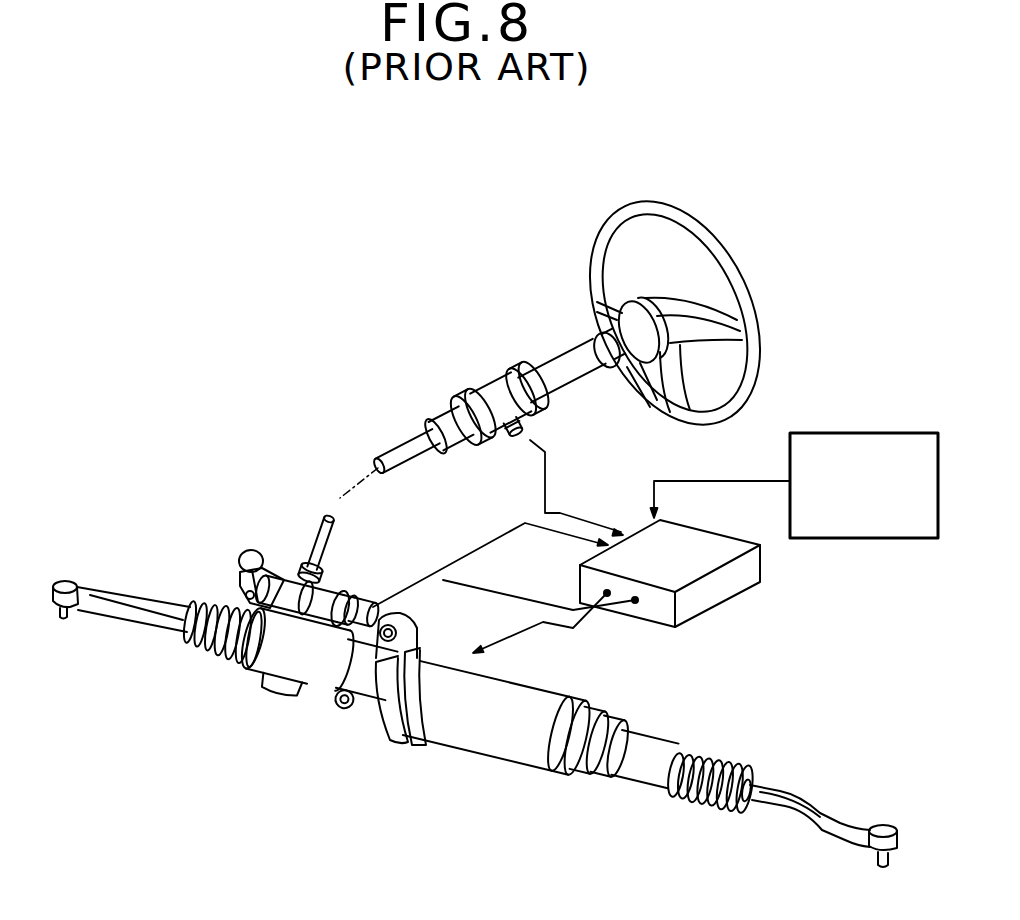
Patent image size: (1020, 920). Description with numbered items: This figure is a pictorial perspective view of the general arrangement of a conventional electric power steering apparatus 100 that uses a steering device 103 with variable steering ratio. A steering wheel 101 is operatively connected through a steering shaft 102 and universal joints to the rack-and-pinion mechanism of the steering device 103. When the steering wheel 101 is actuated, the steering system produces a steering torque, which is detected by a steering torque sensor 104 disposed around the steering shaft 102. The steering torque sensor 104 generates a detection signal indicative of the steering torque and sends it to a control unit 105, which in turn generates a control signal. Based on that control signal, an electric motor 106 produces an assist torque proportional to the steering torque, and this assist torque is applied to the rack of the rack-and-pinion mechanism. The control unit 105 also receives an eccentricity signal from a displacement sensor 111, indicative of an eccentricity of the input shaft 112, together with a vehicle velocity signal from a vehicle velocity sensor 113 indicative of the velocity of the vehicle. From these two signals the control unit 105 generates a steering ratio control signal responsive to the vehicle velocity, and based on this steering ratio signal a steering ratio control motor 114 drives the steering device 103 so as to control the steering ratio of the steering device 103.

The electric power steering apparatus 100 is at (347, 257).
The steering wheel 101 is at (682, 226).
The steering shaft 102 is at (402, 452).
The steering device 103 is at (278, 700).
The steering torque sensor 104 is at (487, 393).
The control unit 105 is at (740, 580).
The electric motor 106 is at (487, 752).
The displacement sensor 111 is at (363, 607).
The input shaft 112 is at (317, 532).
The vehicle velocity sensor 113 is at (888, 432).
The steering ratio control motor 114 is at (293, 577).